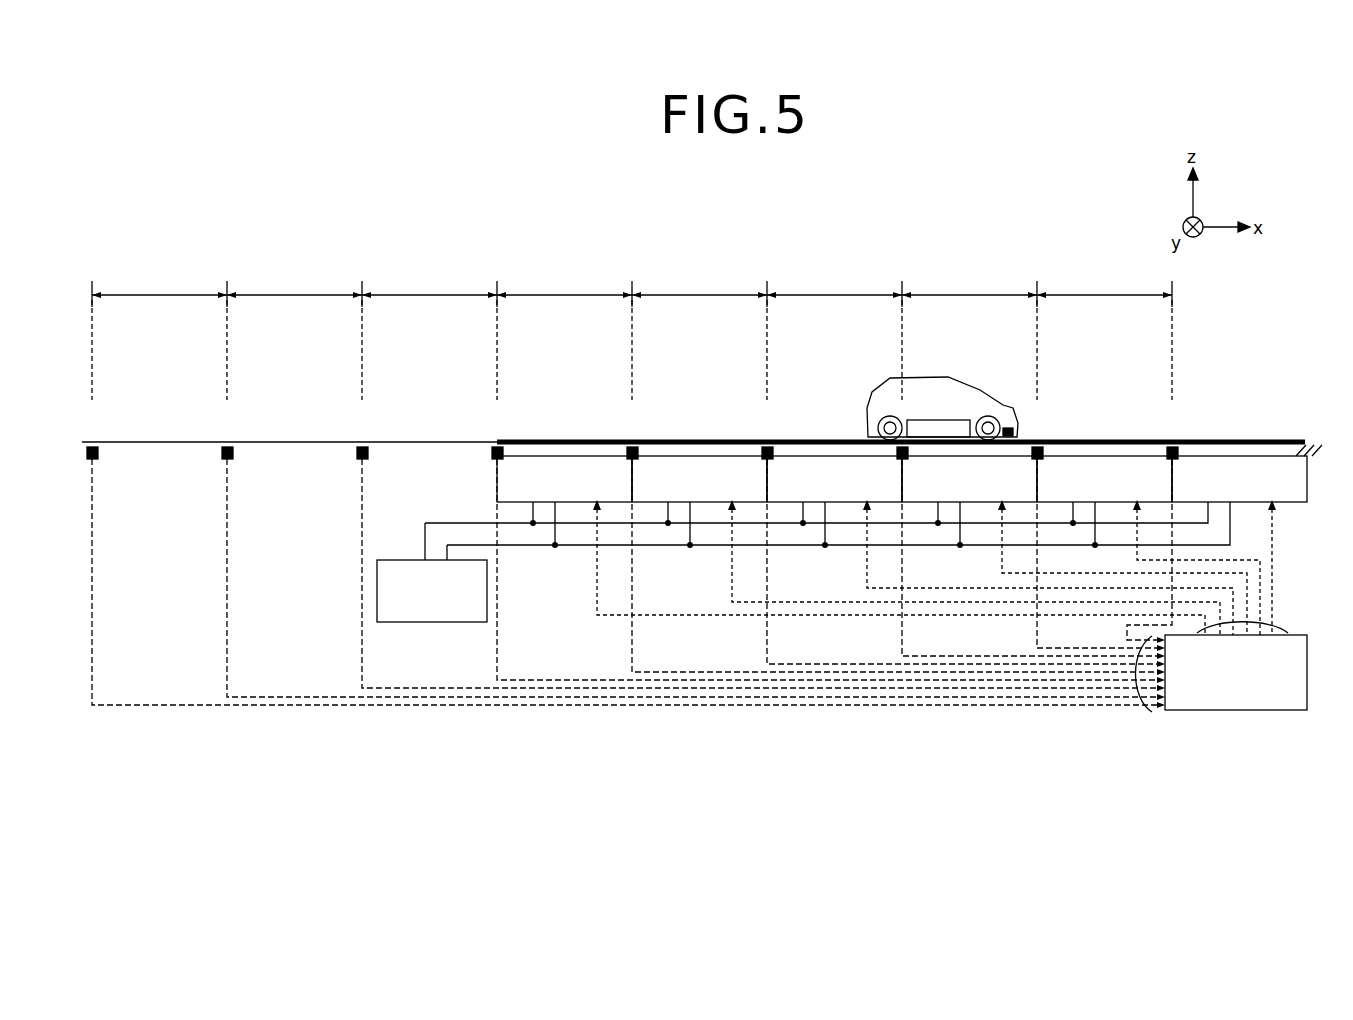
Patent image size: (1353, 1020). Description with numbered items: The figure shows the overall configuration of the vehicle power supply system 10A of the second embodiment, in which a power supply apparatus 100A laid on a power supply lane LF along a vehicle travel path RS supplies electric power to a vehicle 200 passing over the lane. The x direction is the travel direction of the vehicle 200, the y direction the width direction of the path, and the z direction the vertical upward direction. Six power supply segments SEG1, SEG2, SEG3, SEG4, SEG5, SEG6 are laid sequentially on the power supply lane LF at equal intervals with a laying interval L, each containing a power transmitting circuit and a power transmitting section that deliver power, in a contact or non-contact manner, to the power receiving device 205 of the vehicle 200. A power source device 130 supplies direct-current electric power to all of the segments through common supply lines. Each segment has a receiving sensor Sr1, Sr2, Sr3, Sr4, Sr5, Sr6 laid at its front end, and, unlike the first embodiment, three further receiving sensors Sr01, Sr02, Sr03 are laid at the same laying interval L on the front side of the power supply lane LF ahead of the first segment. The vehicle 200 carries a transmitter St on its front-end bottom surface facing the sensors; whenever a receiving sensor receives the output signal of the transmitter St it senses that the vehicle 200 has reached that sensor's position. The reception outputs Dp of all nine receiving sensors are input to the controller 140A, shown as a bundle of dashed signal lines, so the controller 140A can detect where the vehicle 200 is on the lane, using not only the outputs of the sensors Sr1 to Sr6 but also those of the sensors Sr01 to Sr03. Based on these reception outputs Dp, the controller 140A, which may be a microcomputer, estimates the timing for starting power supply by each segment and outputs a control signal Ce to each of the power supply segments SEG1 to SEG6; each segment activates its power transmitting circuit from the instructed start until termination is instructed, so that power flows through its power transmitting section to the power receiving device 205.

The vehicle power supply system 10A is at (156, 270).
The power supply apparatus 100A is at (634, 591).
The power source device 130 is at (430, 622).
The controller 140A is at (1232, 710).
The vehicle 200 is at (919, 385).
The power receiving device 205 is at (938, 420).
The vehicle travel path RS is at (170, 441).
The power supply lane LF is at (1262, 440).
The transmitter St is at (1009, 428).
The control signal Ce is at (952, 567).
The reception output Dp is at (1147, 690).
The receiving sensor Sr03 is at (93, 446).
The receiving sensor Sr02 is at (228, 446).
The receiving sensor Sr01 is at (363, 446).
The receiving sensor Sr1 is at (498, 446).
The receiving sensor Sr2 is at (633, 446).
The receiving sensor Sr3 is at (768, 446).
The receiving sensor Sr4 is at (896, 451).
The receiving sensor Sr5 is at (1037, 446).
The receiving sensor Sr6 is at (1172, 446).
The power supply segment SEG1 is at (564, 479).
The power supply segment SEG2 is at (699, 479).
The power supply segment SEG3 is at (834, 479).
The power supply segment SEG4 is at (969, 479).
The power supply segment SEG5 is at (1104, 479).
The power supply segment SEG6 is at (1239, 479).